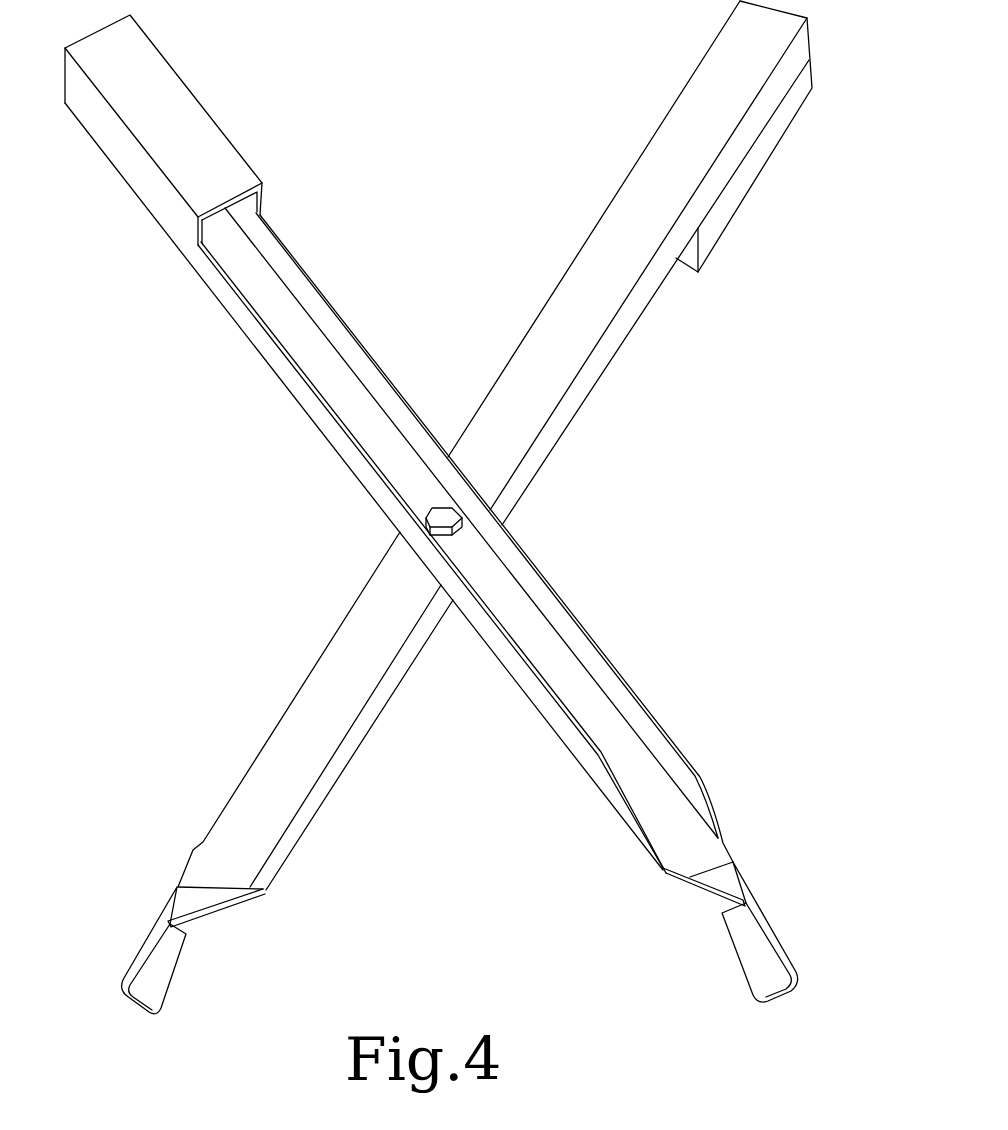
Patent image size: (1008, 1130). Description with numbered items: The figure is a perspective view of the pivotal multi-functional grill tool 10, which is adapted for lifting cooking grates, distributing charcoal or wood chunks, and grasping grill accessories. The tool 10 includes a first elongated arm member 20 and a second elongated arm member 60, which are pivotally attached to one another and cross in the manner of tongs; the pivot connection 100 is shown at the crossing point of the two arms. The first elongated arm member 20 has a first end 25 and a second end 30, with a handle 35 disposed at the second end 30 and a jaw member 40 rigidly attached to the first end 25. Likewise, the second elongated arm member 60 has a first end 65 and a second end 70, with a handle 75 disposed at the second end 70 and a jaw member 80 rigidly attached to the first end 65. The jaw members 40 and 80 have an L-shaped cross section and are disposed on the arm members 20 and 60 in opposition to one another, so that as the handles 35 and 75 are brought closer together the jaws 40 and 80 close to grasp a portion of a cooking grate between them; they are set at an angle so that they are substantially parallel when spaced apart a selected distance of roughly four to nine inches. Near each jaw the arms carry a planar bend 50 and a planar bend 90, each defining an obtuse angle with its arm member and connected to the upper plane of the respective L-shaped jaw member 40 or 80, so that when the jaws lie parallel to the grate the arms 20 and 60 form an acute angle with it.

The pivotal multi-functional grill tool 10 is at (233, 523).
The first elongated arm member 20 is at (624, 668).
The first end 25 is at (683, 828).
The second end 30 is at (277, 230).
The handle 35 is at (180, 110).
The jaw member 40 is at (767, 922).
The planar bend 50 is at (663, 908).
The second elongated arm member 60 is at (290, 763).
The first end 65 is at (243, 830).
The second end 70 is at (683, 153).
The handle 75 is at (767, 138).
The jaw member 80 is at (157, 980).
The planar bend 90 is at (263, 890).
The pivot bolt 100 is at (445, 518).